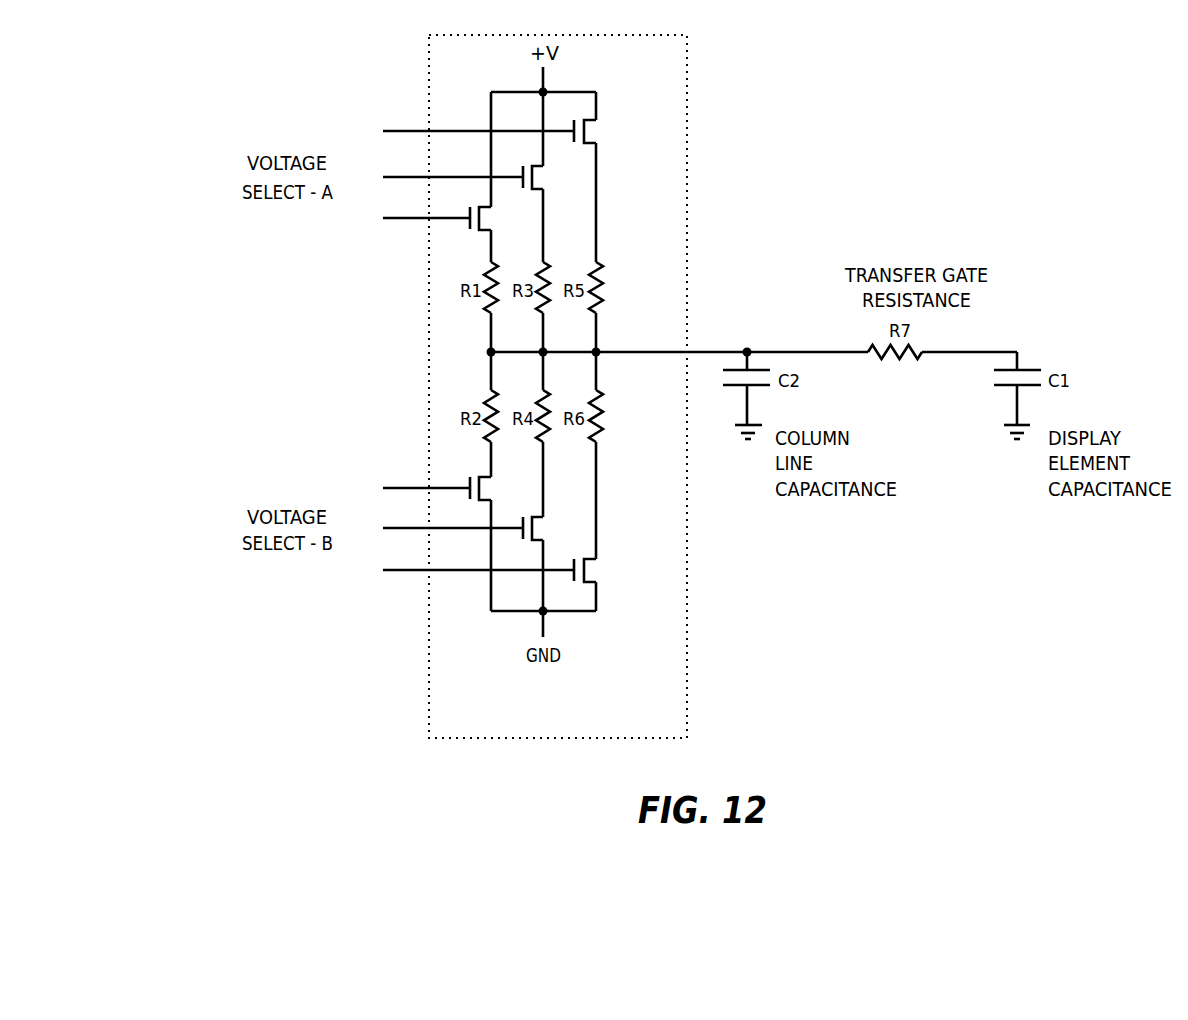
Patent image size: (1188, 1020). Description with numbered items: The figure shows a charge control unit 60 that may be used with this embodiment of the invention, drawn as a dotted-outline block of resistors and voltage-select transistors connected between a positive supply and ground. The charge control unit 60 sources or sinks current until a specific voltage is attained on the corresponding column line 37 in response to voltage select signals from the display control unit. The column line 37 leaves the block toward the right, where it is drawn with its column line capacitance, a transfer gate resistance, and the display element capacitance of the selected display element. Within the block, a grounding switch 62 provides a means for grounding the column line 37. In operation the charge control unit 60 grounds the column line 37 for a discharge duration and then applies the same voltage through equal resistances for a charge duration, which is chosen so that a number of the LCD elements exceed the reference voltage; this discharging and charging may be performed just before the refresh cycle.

The charge control unit 60 is at (428, 52).
The column line 37 is at (707, 350).
The grounding switch 62 is at (597, 575).